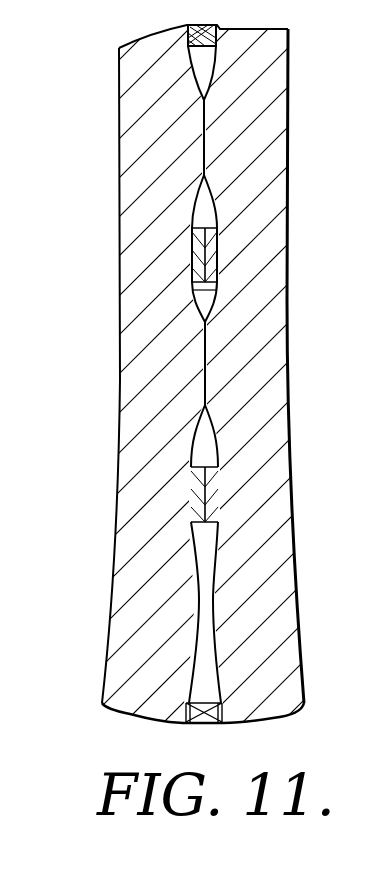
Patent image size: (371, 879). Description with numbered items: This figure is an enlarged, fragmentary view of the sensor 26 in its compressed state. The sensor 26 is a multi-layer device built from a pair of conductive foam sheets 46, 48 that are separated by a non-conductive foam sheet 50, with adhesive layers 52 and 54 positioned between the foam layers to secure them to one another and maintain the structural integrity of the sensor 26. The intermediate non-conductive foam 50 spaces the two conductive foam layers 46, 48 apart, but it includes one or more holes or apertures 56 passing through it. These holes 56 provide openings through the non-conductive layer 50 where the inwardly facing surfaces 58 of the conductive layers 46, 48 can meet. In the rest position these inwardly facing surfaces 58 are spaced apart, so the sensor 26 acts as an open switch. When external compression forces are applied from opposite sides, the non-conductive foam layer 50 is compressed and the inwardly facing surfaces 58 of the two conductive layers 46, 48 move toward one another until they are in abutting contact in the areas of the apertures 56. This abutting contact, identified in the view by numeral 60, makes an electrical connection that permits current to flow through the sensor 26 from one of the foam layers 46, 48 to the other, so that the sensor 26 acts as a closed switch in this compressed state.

The sensor 26 is at (284, 65).
The conductive foam sheet 46 is at (131, 150).
The conductive foam sheet 48 is at (283, 166).
The non-conductive foam sheet 50 is at (222, 230).
The adhesive layer 52 is at (240, 250).
The adhesive layer 54 is at (222, 282).
The holes or apertures 56 is at (205, 316).
The inwardly facing surfaces 58 is at (200, 456).
The abutting contact 60 is at (208, 118).